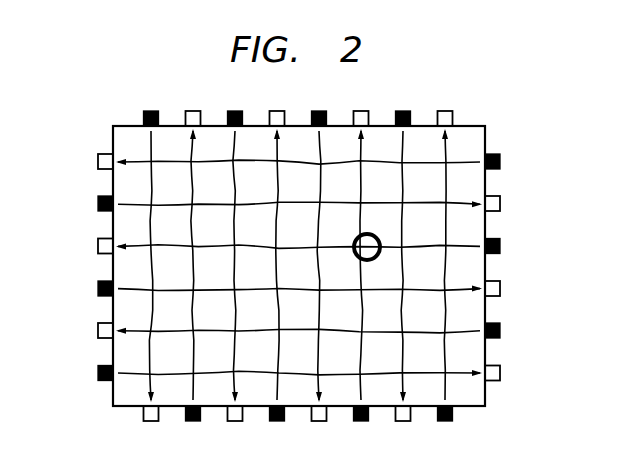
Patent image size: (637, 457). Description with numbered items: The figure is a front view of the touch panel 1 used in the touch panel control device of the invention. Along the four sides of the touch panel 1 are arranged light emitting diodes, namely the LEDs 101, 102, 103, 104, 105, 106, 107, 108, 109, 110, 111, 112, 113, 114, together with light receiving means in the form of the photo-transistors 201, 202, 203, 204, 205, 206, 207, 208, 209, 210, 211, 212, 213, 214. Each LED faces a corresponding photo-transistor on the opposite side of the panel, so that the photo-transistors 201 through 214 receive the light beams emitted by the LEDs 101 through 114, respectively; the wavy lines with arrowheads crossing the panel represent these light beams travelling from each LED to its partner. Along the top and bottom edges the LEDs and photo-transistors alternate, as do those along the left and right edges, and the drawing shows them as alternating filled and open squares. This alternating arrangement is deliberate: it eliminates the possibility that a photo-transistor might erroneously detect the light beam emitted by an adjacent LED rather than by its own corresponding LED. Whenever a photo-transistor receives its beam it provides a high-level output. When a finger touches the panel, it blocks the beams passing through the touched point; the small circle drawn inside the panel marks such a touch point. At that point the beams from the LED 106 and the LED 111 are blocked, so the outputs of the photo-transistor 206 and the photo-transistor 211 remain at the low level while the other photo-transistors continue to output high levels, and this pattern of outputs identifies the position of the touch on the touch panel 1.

The touch panel 1 is at (495, 112).
The LED 101 is at (151, 109).
The LED 102 is at (193, 423).
The LED 103 is at (235, 109).
The LED 104 is at (277, 423).
The LED 105 is at (319, 109).
The LED 106 is at (361, 423).
The LED 107 is at (403, 109).
The LED 108 is at (445, 423).
The LED 109 is at (514, 161).
The LED 110 is at (83, 203).
The LED 111 is at (514, 247).
The LED 112 is at (83, 288).
The LED 113 is at (514, 330).
The LED 114 is at (83, 374).
The photo-transistor 201 is at (151, 423).
The photo-transistor 202 is at (193, 109).
The photo-transistor 203 is at (235, 423).
The photo-transistor 204 is at (277, 109).
The photo-transistor 205 is at (319, 423).
The photo-transistor 206 is at (361, 109).
The photo-transistor 207 is at (403, 423).
The photo-transistor 208 is at (445, 109).
The photo-transistor 209 is at (83, 161).
The photo-transistor 210 is at (514, 203).
The photo-transistor 211 is at (83, 247).
The photo-transistor 212 is at (514, 288).
The photo-transistor 213 is at (83, 330).
The photo-transistor 214 is at (514, 374).